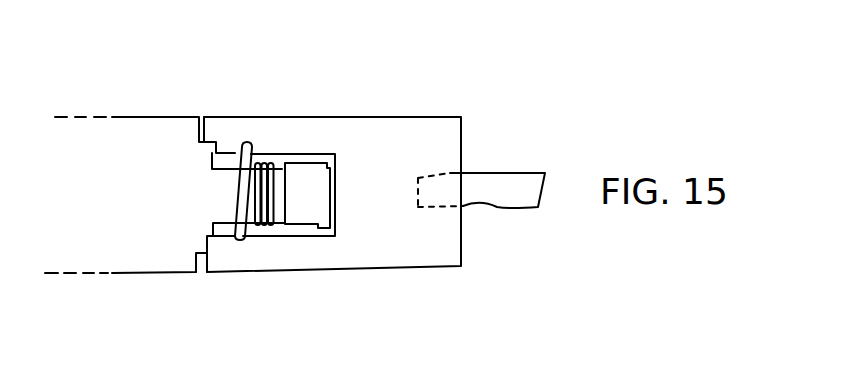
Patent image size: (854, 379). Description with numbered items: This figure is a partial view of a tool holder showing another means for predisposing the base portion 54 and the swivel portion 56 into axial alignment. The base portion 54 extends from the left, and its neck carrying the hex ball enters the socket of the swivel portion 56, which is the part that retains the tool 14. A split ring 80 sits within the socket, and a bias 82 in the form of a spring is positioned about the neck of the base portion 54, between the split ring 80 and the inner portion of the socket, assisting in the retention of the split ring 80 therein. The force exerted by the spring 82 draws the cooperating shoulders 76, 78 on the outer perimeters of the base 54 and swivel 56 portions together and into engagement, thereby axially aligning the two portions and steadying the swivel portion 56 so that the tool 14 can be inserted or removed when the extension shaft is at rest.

The tool 14 is at (526, 201).
The base portion 54 is at (174, 205).
The swivel portion 56 is at (393, 204).
The annular surface (shoulder) of base portion 76 is at (195, 288).
The annular surface (shoulder) of swivel portion 78 is at (208, 289).
The split ring 80 is at (236, 154).
The bias (spring) 82 is at (278, 203).